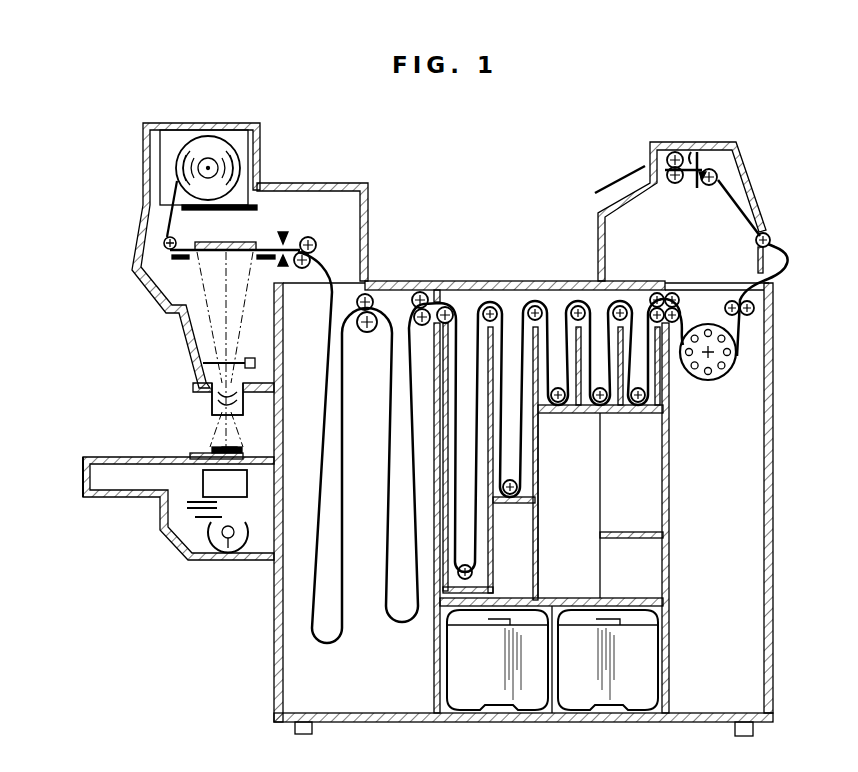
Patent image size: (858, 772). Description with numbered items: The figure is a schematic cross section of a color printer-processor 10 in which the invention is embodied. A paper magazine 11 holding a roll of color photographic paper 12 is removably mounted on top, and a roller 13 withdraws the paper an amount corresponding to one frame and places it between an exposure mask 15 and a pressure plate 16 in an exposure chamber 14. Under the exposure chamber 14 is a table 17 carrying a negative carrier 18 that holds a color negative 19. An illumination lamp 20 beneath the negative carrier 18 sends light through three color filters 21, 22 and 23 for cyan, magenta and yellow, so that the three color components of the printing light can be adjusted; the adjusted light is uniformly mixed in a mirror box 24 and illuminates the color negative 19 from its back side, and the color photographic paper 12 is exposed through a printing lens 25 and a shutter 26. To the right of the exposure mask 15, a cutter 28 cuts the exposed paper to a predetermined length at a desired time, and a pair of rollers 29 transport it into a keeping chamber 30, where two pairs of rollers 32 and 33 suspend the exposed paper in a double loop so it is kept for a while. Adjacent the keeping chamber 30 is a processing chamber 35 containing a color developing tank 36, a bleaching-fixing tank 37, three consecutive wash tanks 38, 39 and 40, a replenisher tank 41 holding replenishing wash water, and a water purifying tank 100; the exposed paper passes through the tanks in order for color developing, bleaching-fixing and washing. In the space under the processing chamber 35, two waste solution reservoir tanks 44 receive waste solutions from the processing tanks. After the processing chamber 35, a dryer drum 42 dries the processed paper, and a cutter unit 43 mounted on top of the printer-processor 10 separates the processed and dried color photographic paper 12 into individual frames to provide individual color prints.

The printer-processor 10 is at (774, 503).
The paper magazine 11 is at (172, 145).
The color photographic paper 12 is at (170, 212).
The roller 13 is at (163, 243).
The exposure chamber 14 is at (322, 200).
The exposure mask 15 is at (186, 259).
The pressure plate 16 is at (238, 243).
The table 17 is at (83, 478).
The negative carrier 18 is at (200, 456).
The color negative 19 is at (212, 447).
The illumination lamp 20 is at (228, 557).
The color filter 21 is at (197, 518).
The color filter 22 is at (190, 510).
The color filter 23 is at (190, 503).
The mirror box 24 is at (240, 484).
The printing lens 25 is at (212, 397).
The shutter 26 is at (203, 362).
The cutter 28 is at (283, 230).
The pair of rollers 29 is at (316, 247).
The keeping chamber 30 is at (372, 693).
The pair of rollers 32 is at (370, 310).
The pair of rollers 33 is at (428, 292).
The processing chamber 35 is at (552, 300).
The color developing tank 36 is at (482, 563).
The bleaching-fixing tank 37 is at (527, 480).
The wash tank 38 is at (572, 416).
The wash tank 39 is at (592, 416).
The wash tank 40 is at (653, 400).
The replenisher tank 41 is at (588, 570).
The dryer drum 42 is at (733, 365).
The cutter unit 43 is at (694, 150).
The waste solution reservoir tank 44 is at (520, 692).
The water purifying tank 100 is at (650, 492).